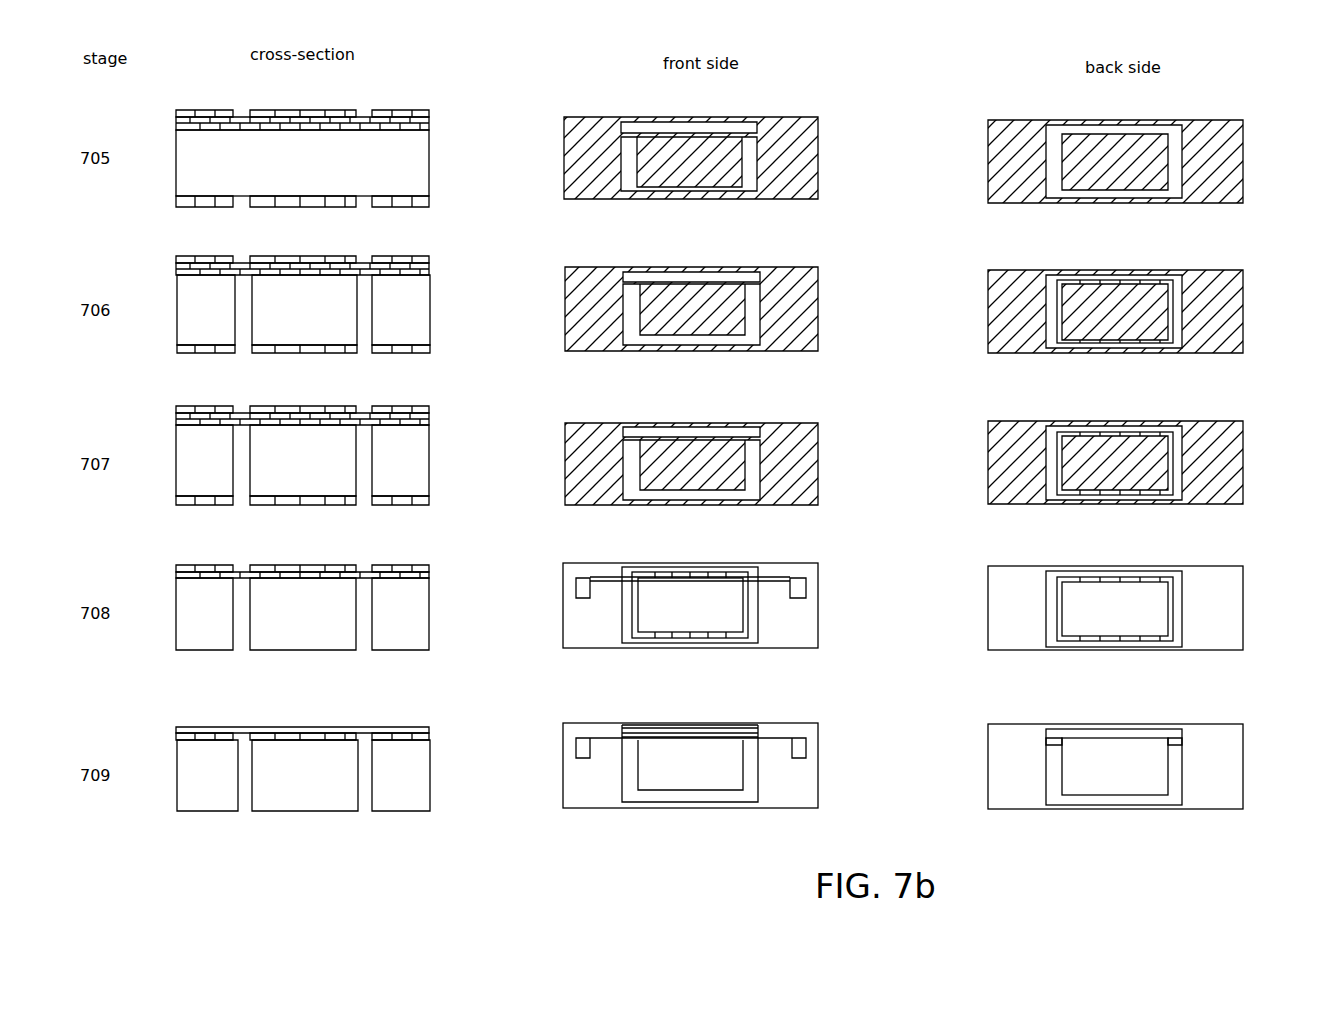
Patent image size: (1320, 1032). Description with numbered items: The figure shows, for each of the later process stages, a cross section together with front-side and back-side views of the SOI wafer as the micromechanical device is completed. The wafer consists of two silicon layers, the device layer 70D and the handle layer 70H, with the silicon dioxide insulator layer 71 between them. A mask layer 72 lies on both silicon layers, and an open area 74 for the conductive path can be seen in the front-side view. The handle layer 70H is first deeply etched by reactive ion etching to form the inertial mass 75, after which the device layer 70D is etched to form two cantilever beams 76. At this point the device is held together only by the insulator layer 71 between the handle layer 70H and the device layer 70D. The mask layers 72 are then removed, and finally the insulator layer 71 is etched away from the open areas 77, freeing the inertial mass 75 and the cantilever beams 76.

The device layer 70D is at (430, 121).
The handle layer 70H is at (422, 160).
The insulator layer 71 is at (372, 110).
The mask layer 72 is at (283, 110).
The open area 74 is at (797, 588).
The inertial mass 75 is at (361, 333).
The cantilever beams 76 is at (240, 407).
The open areas 77 is at (694, 797).